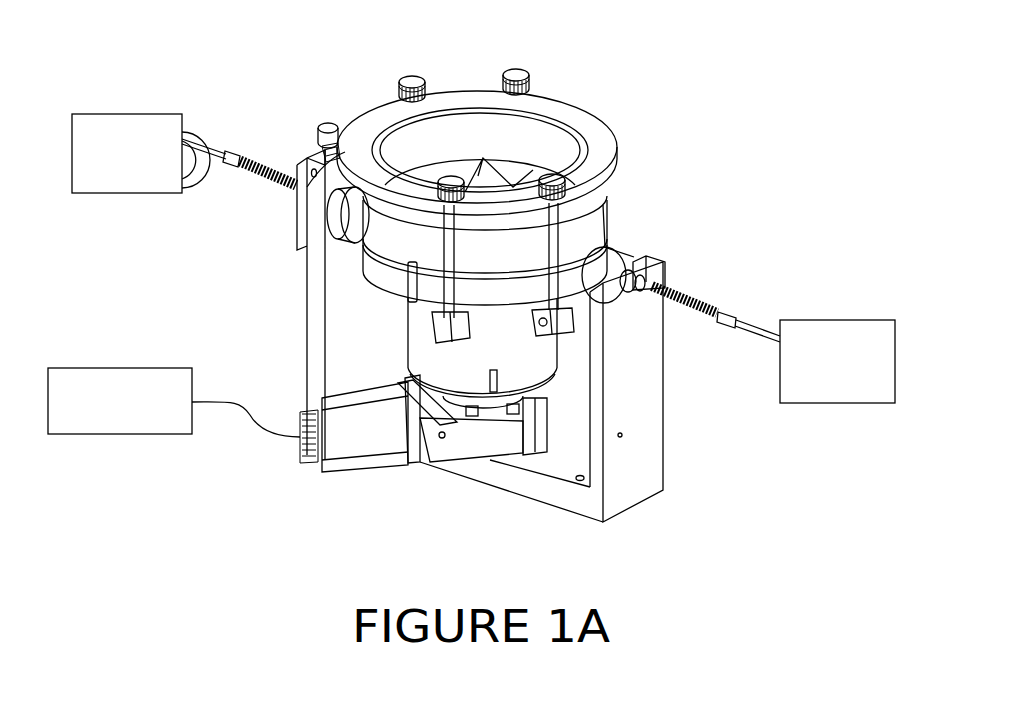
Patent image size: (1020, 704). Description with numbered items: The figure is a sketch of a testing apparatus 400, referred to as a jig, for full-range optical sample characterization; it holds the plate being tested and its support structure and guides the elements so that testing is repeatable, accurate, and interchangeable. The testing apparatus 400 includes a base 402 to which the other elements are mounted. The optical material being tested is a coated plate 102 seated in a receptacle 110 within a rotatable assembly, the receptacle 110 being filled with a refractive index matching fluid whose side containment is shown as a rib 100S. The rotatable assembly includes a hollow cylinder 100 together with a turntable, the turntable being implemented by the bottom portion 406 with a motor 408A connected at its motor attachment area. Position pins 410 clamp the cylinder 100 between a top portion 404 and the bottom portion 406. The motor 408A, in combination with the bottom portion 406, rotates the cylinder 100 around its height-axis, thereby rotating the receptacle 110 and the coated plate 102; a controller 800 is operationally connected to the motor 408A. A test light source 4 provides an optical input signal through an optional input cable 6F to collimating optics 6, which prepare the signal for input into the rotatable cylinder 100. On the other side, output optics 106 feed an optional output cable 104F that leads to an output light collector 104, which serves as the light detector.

The test light source 4 is at (127, 153).
The collimating optics 6 is at (345, 110).
The input cable 6F is at (247, 157).
The cylinder 100 is at (345, 256).
The rib 100S is at (410, 289).
The coated plate 102 is at (487, 185).
The output light collector 104 is at (837, 361).
The output cable 104F is at (702, 302).
The output optics 106 is at (630, 249).
The receptacle 110 is at (553, 165).
The testing apparatus 400 is at (411, 54).
The base 402 is at (343, 330).
The top portion 404 is at (556, 112).
The bottom portion 406 is at (440, 325).
The motor 408A is at (473, 437).
The position pins 410 is at (545, 182).
The controller 800 is at (174, 402).